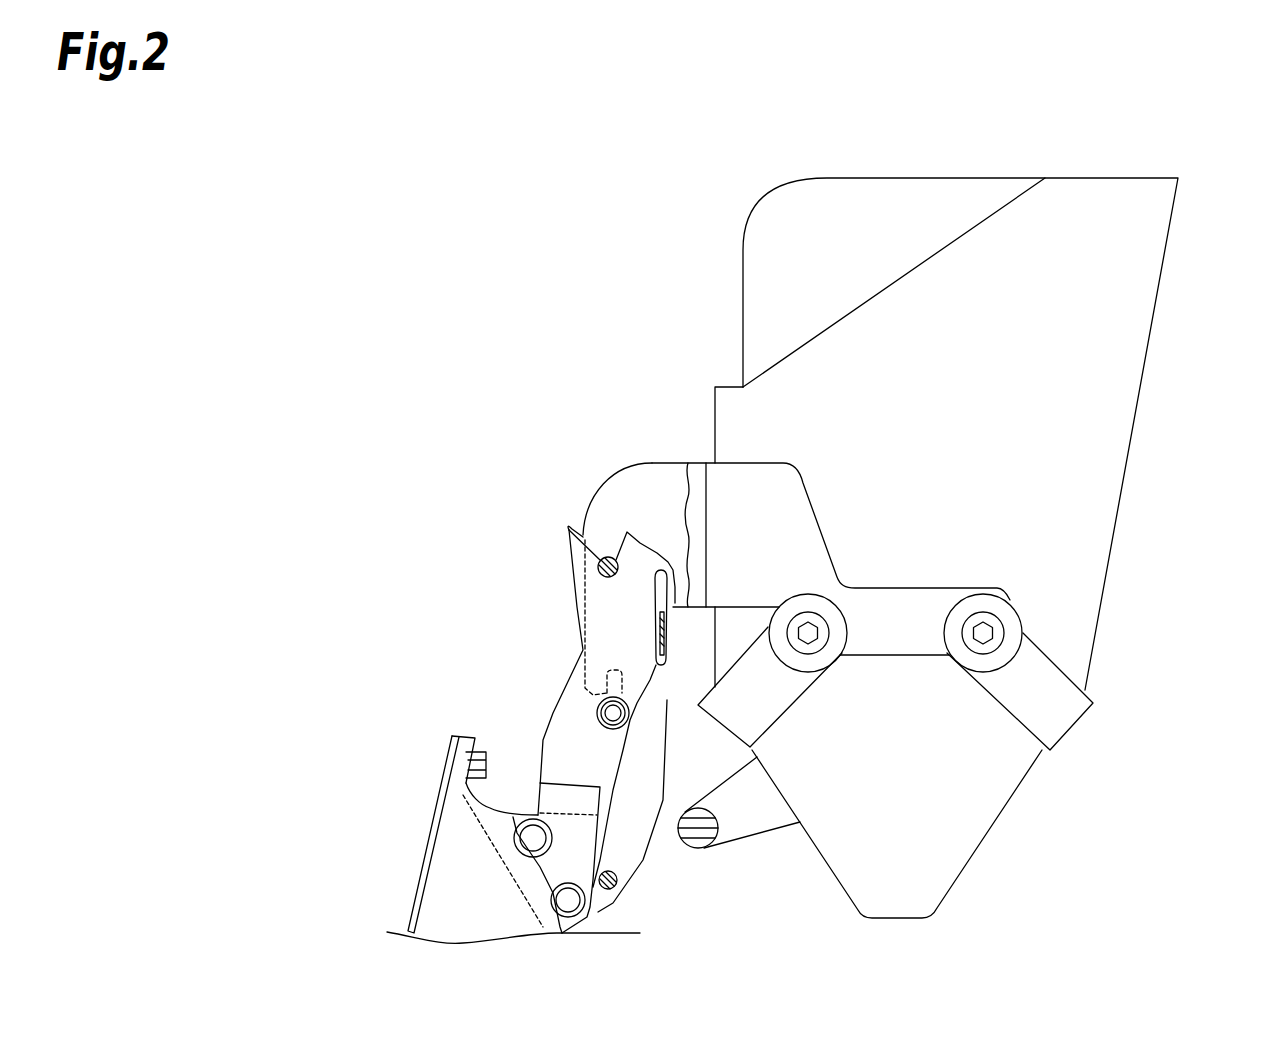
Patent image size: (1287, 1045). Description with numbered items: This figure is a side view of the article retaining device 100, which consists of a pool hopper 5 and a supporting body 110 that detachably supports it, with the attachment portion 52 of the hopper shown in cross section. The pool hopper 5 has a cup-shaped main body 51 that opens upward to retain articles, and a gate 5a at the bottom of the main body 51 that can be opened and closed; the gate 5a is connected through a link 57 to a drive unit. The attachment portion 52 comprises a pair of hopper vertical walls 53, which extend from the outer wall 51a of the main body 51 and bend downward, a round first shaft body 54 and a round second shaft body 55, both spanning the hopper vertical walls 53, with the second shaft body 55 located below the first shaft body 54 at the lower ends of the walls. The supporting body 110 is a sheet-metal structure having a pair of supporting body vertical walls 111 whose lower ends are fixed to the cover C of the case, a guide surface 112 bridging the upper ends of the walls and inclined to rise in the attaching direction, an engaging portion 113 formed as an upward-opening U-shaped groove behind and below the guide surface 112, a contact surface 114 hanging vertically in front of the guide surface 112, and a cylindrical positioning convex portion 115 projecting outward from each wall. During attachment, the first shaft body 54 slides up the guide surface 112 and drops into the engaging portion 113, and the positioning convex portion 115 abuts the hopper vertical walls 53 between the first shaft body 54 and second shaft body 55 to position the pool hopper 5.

The article retaining device 100 is at (242, 213).
The pool hopper 5 is at (1187, 157).
The main body 51 is at (1133, 260).
The outer wall 51a is at (712, 407).
The attachment portion 52 is at (645, 447).
The hopper vertical wall 53 is at (635, 483).
The first shaft body 54 is at (613, 540).
The second shaft body 55 is at (612, 882).
The link 57 is at (748, 817).
The gate 5a is at (818, 850).
The supporting body 110 is at (523, 518).
The supporting body vertical wall 111 is at (563, 722).
The guide surface 112 is at (657, 540).
The engaging portion 113 is at (598, 565).
The contact surface 114 is at (672, 640).
The positioning convex portion 115 is at (597, 707).
The cover C is at (450, 822).